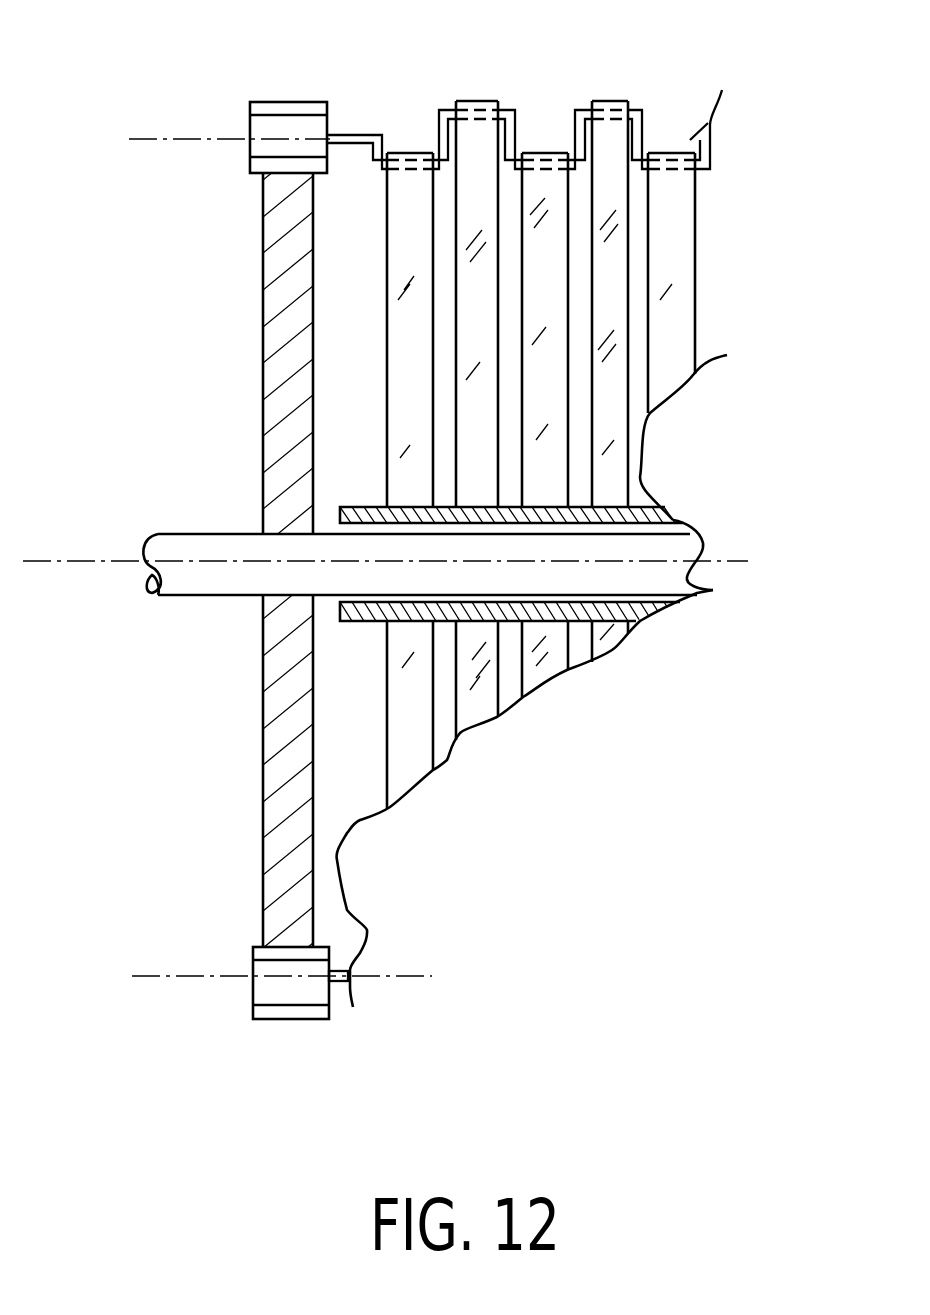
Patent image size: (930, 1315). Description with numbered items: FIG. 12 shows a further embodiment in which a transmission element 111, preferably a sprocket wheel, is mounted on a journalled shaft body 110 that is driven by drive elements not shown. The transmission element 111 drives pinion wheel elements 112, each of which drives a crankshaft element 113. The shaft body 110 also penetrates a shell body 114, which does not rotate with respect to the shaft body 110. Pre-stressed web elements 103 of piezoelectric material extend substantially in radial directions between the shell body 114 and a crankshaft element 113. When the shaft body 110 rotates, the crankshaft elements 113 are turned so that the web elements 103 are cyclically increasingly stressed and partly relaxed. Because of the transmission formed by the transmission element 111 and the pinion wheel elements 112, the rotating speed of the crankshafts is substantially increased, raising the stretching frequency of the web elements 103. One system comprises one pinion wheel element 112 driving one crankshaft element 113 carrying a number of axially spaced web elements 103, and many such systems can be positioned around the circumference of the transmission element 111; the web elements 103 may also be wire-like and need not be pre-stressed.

The web element 103 is at (480, 103).
The shaft body 110 is at (188, 547).
The transmission element 111 is at (268, 268).
The pinion wheel element 112 is at (252, 108).
The crankshaft element 113 is at (357, 140).
The shell body 114 is at (357, 622).